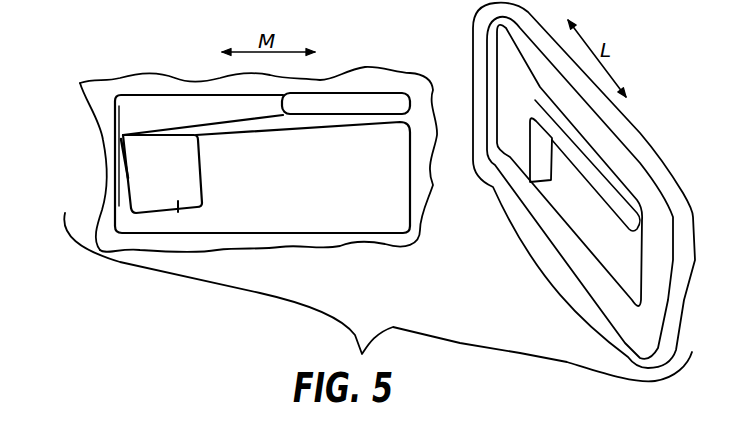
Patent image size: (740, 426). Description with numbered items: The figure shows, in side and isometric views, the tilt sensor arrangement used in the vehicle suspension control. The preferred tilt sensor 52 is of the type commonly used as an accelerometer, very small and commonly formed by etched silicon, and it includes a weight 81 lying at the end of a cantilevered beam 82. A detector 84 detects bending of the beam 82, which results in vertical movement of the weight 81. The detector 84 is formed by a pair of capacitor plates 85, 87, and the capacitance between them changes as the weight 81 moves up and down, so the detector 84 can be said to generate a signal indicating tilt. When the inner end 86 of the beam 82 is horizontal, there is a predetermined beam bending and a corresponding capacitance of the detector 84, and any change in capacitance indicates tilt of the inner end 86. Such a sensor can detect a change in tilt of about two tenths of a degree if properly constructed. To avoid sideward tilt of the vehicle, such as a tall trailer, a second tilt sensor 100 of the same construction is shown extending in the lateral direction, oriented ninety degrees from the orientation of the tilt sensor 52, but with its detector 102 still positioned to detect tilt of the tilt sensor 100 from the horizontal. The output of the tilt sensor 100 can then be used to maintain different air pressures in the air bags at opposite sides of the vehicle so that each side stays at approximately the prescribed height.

The tilt sensor 52 is at (162, 64).
The weight 81 is at (178, 212).
The cantilevered beam 82 is at (287, 96).
The detector 84 is at (100, 108).
The capacitor plate 85 is at (123, 170).
The inner end of the beam 86 is at (394, 124).
The capacitor plate 87 is at (113, 132).
The tilt sensor 100 is at (655, 133).
The detector 102 is at (454, 25).